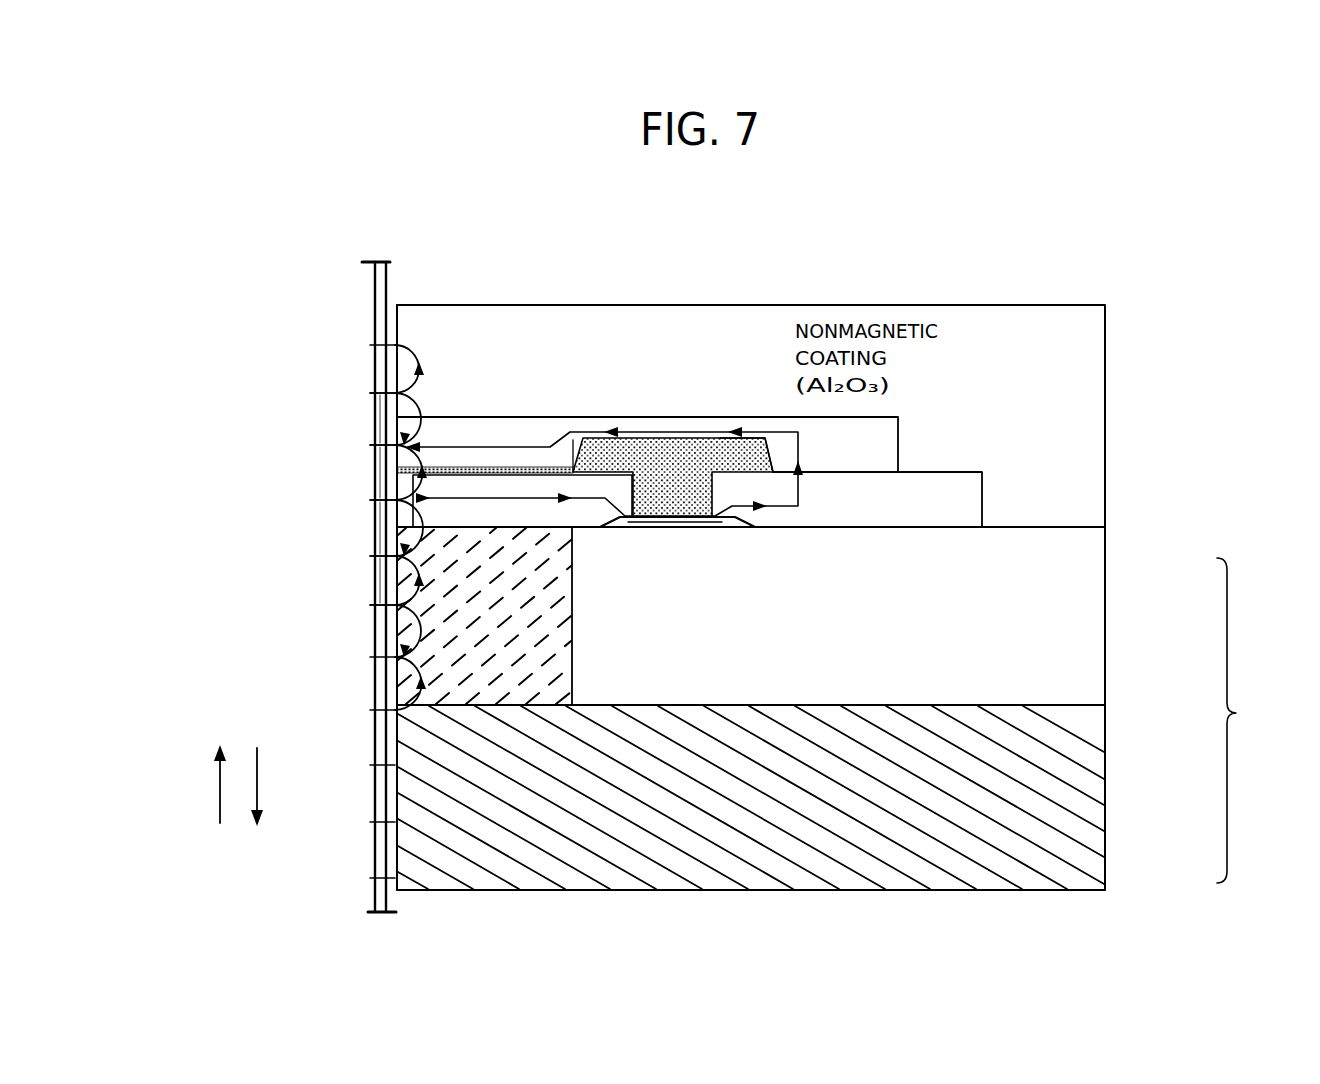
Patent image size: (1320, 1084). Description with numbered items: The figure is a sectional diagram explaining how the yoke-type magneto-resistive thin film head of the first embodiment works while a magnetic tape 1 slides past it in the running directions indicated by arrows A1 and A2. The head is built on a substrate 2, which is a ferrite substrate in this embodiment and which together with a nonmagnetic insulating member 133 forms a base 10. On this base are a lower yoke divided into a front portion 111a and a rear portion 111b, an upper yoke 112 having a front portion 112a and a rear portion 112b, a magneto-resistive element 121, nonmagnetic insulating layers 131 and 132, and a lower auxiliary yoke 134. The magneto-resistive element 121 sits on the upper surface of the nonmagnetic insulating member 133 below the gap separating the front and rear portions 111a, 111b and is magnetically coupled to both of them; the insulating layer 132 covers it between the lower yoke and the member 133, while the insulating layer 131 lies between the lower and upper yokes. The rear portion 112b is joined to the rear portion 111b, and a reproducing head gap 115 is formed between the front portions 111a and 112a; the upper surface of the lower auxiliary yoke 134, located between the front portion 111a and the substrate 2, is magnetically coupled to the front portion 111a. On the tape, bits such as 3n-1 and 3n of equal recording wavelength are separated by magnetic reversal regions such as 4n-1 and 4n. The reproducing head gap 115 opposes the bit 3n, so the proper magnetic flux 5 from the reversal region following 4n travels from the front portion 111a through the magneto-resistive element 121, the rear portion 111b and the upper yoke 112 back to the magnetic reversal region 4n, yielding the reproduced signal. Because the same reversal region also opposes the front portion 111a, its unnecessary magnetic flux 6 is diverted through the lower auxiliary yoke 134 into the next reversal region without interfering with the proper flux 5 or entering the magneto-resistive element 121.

The magnetic tape 1 is at (372, 858).
The substrate 2 is at (1042, 834).
The proper magnetic flux 5 is at (577, 425).
The unnecessary magnetic flux 6 is at (418, 420).
The base 10 is at (1251, 720).
The front portion of the lower yoke 111a is at (575, 507).
The rear portion of the lower yoke 111b is at (970, 498).
The upper yoke 112 is at (672, 500).
The front portion of the upper yoke 112a is at (508, 432).
The rear portion of the upper yoke 112b is at (887, 433).
The reproducing head gap 115 is at (460, 463).
The magneto-resistive element 121 is at (723, 533).
The nonmagnetic insulating layer 131 is at (745, 455).
The nonmagnetic insulating layer 132 is at (707, 533).
The nonmagnetic insulating member 133 is at (1045, 590).
The lower auxiliary yoke 134 is at (507, 655).
The bit 3n-1 is at (380, 418).
The bit 3n is at (380, 472).
The magnetic reversal region 4n-1 is at (370, 393).
The magnetic reversal region 4n is at (370, 447).
The arrow A1 is at (271, 787).
The arrow A2 is at (199, 784).